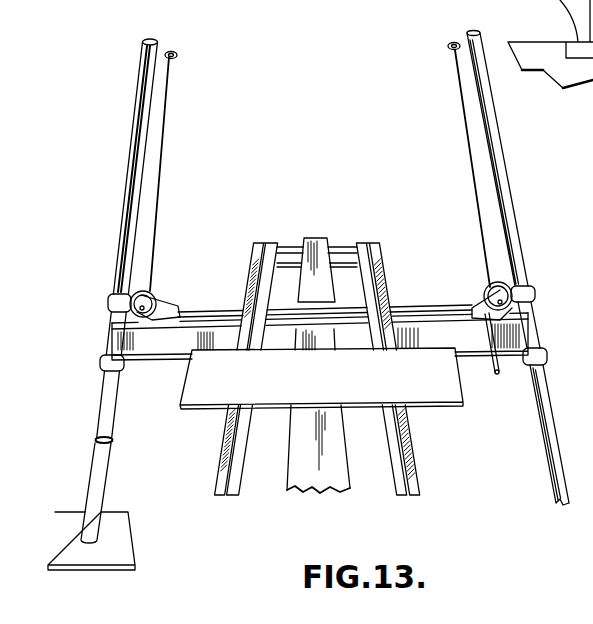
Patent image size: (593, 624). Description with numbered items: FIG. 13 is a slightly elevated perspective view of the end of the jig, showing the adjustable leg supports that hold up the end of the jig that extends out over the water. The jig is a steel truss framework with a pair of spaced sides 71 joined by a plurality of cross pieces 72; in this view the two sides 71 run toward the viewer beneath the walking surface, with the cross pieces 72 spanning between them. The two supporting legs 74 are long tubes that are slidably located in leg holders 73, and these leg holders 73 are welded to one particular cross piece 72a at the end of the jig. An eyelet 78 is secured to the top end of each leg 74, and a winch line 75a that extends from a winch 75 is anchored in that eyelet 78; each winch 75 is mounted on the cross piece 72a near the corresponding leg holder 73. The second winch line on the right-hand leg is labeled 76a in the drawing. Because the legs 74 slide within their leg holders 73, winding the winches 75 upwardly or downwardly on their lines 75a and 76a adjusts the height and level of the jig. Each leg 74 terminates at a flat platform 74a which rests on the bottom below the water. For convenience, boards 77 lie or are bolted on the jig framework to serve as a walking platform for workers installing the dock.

The spaced sides 71 is at (262, 245).
The cross pieces 72 is at (343, 252).
The cross piece 72a is at (218, 310).
The leg holders 73 is at (107, 322).
The supporting legs 74 is at (124, 223).
The flat platform 74a is at (115, 526).
The winch 75 is at (144, 312).
The winch line 75a is at (161, 192).
The tie rod 76a is at (473, 187).
The boards 77 is at (327, 380).
The eyelet 78 is at (177, 53).